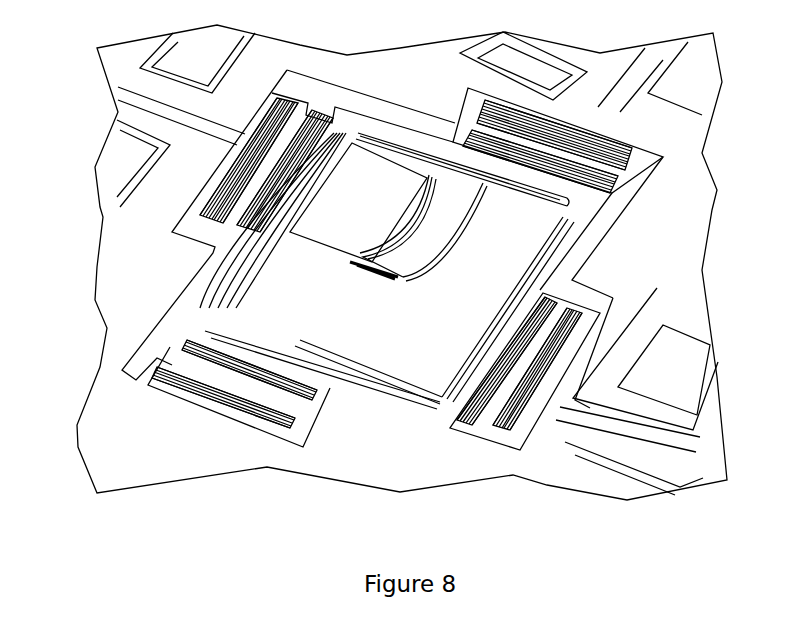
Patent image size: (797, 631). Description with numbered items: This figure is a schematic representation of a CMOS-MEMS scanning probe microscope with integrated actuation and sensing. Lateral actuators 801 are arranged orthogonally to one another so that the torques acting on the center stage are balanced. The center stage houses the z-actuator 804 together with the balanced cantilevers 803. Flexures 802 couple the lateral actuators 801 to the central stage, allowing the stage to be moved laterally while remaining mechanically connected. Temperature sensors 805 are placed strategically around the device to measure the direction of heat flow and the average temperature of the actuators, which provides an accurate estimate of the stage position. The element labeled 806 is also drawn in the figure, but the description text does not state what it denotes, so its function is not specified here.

The lateral actuators 801 is at (482, 110).
The flexures 802 is at (507, 172).
The balanced cantilevers 803 is at (397, 250).
The z-actuator 804 is at (362, 270).
The temperature sensors 805 is at (413, 388).
The curved spring beam 806 is at (447, 248).